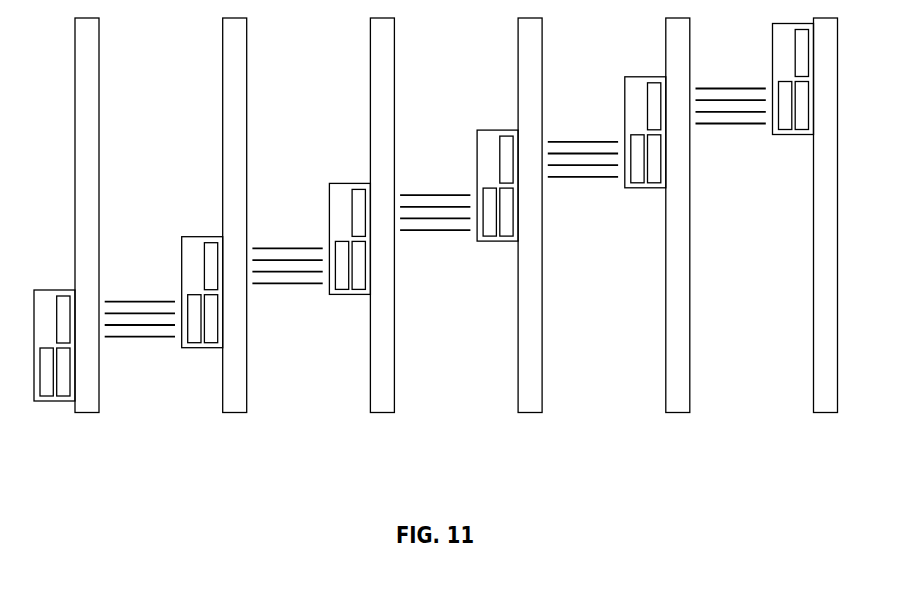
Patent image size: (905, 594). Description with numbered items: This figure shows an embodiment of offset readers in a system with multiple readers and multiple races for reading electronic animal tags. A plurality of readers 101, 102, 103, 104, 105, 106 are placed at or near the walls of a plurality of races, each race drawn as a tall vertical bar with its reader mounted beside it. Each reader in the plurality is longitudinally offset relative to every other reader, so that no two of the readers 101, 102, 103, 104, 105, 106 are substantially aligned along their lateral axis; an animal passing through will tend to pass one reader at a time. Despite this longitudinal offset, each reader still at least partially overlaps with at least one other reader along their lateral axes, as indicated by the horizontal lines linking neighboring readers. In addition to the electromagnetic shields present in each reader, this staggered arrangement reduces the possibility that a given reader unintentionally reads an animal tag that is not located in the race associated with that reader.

The reader 101 is at (51, 401).
The reader 102 is at (198, 348).
The reader 103 is at (346, 294).
The reader 104 is at (494, 241).
The reader 105 is at (642, 188).
The reader 106 is at (789, 134).